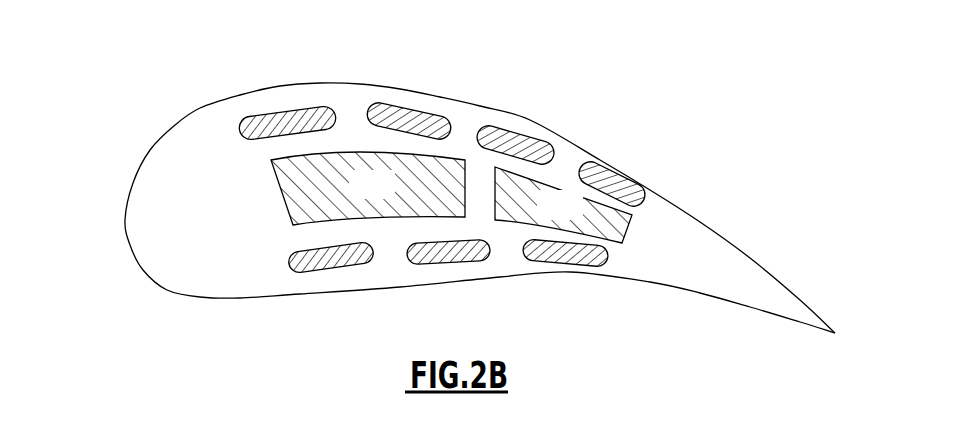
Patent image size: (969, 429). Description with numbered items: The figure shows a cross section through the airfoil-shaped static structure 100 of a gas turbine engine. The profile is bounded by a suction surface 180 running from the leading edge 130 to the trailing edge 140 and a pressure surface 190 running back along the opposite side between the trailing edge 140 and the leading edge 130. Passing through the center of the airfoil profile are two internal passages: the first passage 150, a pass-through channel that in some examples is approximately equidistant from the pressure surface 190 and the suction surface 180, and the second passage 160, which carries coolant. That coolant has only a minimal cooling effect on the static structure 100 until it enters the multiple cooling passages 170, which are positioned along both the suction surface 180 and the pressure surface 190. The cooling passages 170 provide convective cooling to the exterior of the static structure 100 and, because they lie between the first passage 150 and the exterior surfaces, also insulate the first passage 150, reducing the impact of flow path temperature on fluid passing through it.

The static structure 100 is at (462, 206).
The leading edge 130 is at (126, 240).
The trailing edge 140 is at (835, 333).
The first passage 150 is at (393, 196).
The second passage 160 is at (581, 218).
The cooling passages 170 is at (592, 165).
The suction surface 180 is at (311, 83).
The pressure surface 190 is at (312, 298).